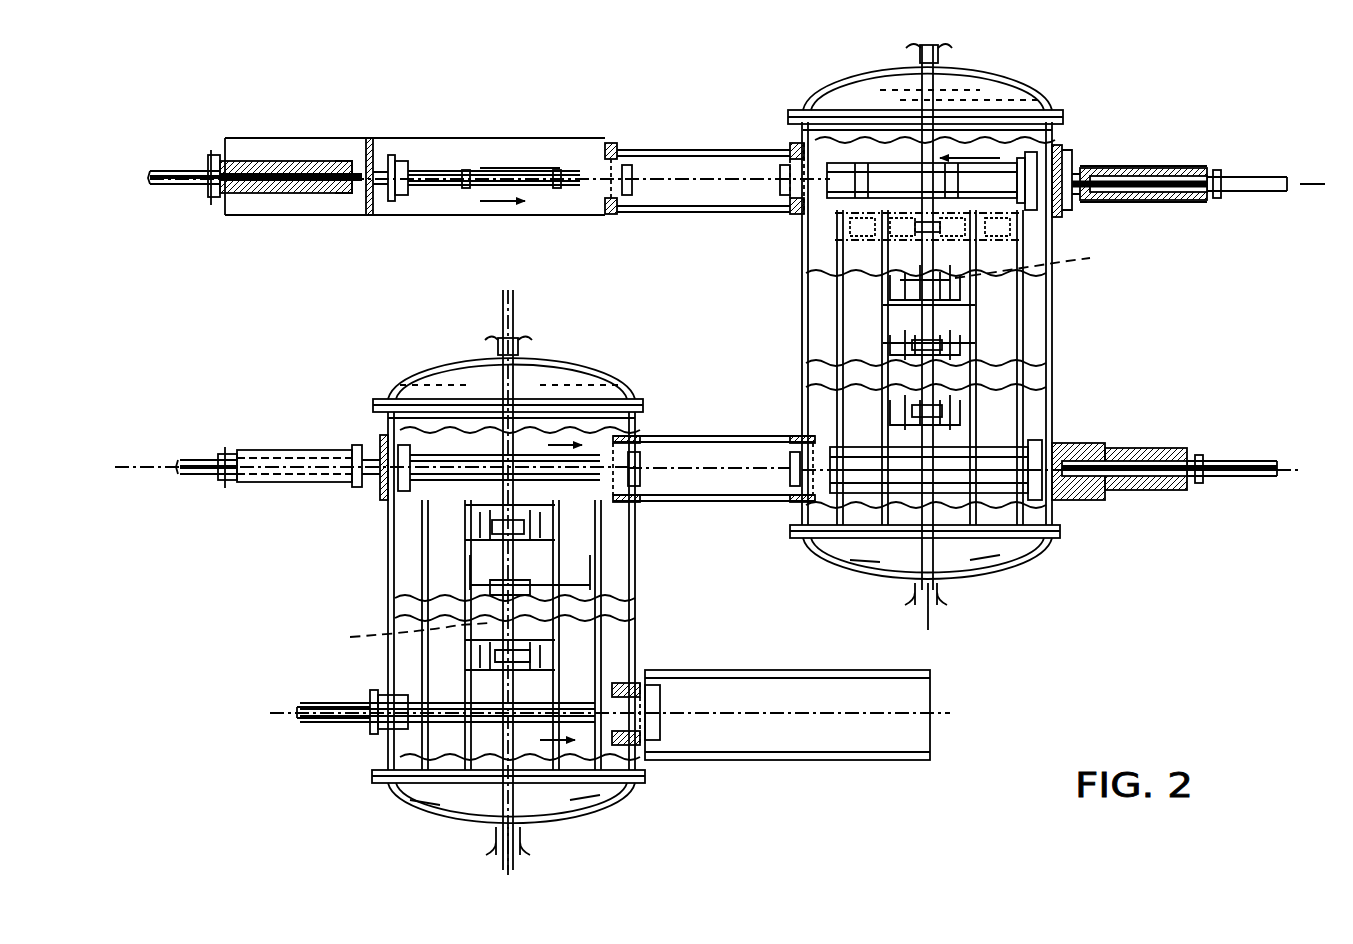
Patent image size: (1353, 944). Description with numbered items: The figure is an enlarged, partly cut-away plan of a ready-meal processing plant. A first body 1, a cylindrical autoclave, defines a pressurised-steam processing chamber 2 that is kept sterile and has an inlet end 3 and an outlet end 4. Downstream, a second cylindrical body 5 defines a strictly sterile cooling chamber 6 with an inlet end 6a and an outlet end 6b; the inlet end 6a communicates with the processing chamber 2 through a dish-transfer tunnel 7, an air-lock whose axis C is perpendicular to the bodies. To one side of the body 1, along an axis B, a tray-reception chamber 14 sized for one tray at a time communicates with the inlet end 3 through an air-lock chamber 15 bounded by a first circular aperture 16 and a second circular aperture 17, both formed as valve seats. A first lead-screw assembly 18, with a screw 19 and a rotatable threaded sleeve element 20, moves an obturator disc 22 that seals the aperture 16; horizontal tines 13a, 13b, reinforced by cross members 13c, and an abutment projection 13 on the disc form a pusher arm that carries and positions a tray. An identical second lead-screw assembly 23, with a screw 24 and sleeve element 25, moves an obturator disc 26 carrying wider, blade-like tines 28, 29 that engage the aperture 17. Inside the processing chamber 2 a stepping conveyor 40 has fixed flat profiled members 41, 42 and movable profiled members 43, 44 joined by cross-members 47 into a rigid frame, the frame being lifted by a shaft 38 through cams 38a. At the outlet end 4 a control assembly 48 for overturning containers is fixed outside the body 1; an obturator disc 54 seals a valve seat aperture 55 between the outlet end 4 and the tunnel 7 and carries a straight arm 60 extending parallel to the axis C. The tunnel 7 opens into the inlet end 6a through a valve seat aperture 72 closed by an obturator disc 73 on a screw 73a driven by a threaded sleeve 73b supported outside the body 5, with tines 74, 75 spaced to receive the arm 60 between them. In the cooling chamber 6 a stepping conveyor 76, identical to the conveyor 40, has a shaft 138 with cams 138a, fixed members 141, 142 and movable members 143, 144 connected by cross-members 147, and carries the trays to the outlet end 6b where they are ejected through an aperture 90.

The first body 1 is at (1060, 415).
The processing chamber 2 is at (805, 248).
The inlet end of the processing chamber 3 is at (832, 125).
The outlet end of the processing chamber 4 is at (893, 502).
The second body 5 is at (600, 636).
The cooling chamber 6 is at (390, 512).
The inlet end of the cooling chamber 6a is at (580, 430).
The outlet end of the cooling chamber 6b is at (560, 745).
The dish-transfer tunnel 7 is at (745, 498).
The abutment projection 13 is at (403, 160).
The tine 13a is at (448, 165).
The tine 13b is at (500, 168).
The cross members 13c is at (468, 188).
The tray-reception chamber 14 is at (432, 218).
The air-lock chamber 15 is at (688, 150).
The first circular aperture 16 is at (612, 143).
The second circular aperture 17 is at (785, 150).
The first lead-screw assembly 18 is at (240, 150).
The screw 19 is at (257, 195).
The rotatable threaded sleeve element 20 is at (285, 160).
The obturator disc 22 is at (372, 140).
The second lead-screw assembly 23 is at (1185, 160).
The screw 24 is at (1255, 178).
The sleeve element 25 is at (1138, 170).
The obturator disc 26 is at (1060, 155).
The tine 28 is at (878, 165).
The tine 29 is at (960, 190).
The shaft 38 is at (925, 312).
The cams 38a is at (1041, 249).
The stepping conveyor 40 is at (1020, 318).
The fixed flat profiled member 41 is at (830, 265).
The fixed flat profiled member 42 is at (1020, 352).
The movable flat profiled member 43 is at (890, 320).
The movable flat profiled member 44 is at (990, 400).
The cross-members 47 is at (895, 345).
The control assembly 48 is at (1155, 495).
The obturator disc 54 is at (1055, 540).
The valve seat aperture 55 is at (798, 445).
The straight arm 60 is at (965, 480).
The valve seat aperture 72 is at (625, 498).
The obturator disc 73 is at (395, 445).
The screw 73a is at (272, 482).
The threaded sleeve 73b is at (300, 452).
The tine 74 is at (445, 445).
The tine 75 is at (460, 470).
The stepping conveyor 76 is at (412, 588).
The aperture 90 is at (640, 745).
The shaft 138 is at (500, 672).
The cams 138a is at (387, 635).
The fixed flat profiled member 141 is at (462, 562).
The fixed flat profiled member 142 is at (600, 560).
The movable flat profiled member 143 is at (418, 548).
The movable flat profiled member 144 is at (560, 580).
The cross-members 147 is at (580, 658).
The axis B is at (740, 185).
The axis C is at (668, 462).